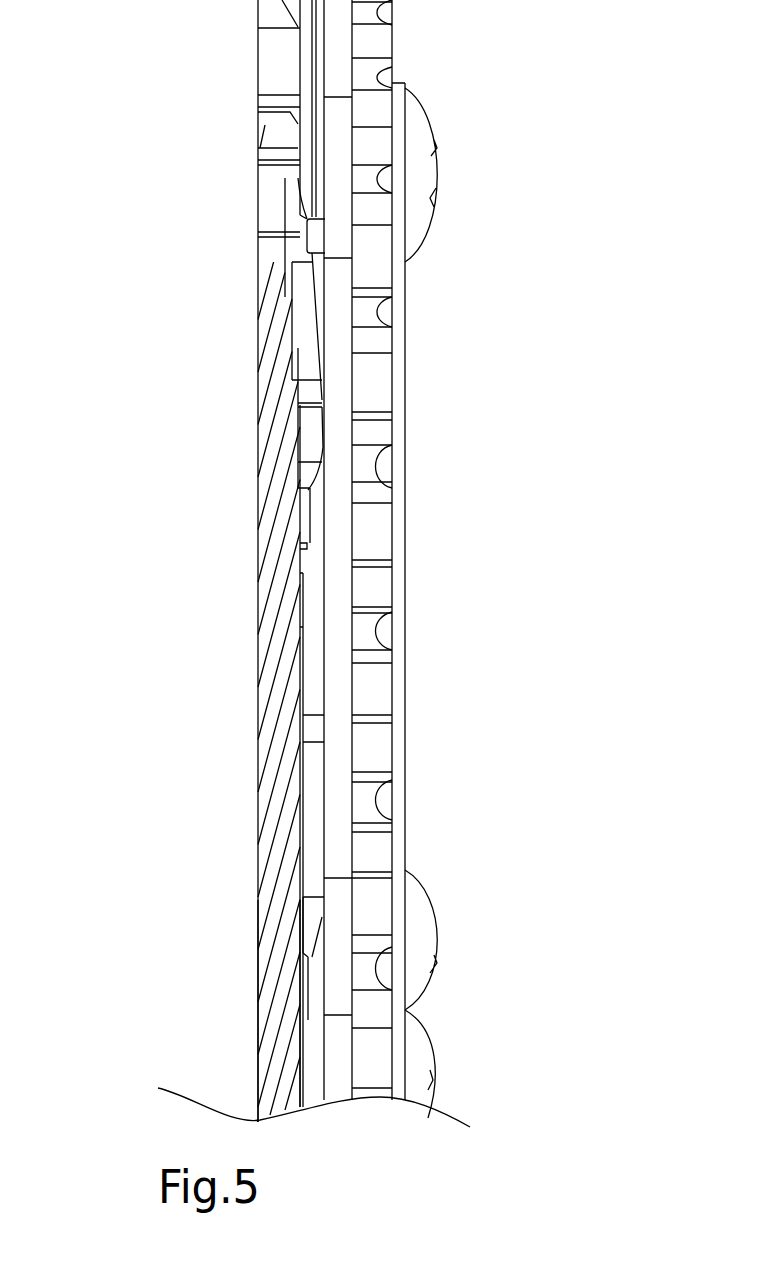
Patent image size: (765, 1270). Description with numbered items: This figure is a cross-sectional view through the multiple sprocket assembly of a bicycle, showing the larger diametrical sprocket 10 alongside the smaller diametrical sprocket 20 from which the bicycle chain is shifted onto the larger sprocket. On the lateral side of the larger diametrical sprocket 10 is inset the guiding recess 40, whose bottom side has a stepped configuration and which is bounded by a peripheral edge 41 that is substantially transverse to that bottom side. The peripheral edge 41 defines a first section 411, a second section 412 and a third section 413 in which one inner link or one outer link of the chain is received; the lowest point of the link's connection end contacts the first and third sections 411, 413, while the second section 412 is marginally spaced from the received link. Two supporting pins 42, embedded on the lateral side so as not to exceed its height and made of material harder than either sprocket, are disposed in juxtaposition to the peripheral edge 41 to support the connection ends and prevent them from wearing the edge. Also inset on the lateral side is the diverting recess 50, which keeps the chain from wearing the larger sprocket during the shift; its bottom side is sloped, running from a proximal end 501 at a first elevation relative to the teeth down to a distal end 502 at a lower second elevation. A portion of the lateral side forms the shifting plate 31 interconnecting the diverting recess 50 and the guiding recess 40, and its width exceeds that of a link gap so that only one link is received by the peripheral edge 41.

The larger diametrical sprocket 10 is at (285, 1033).
The smaller diametrical sprocket 20 is at (395, 855).
The shifting plate 31 is at (303, 507).
The guiding recess 40 is at (178, 263).
The peripheral edge 41 is at (196, 334).
The first section 411 is at (300, 253).
The second section 412 is at (300, 336).
The third section 413 is at (310, 392).
The supporting pin 42 is at (317, 235).
The diverting recess 50 is at (266, 698).
The proximal end 501 is at (307, 955).
The distal end 502 is at (300, 545).